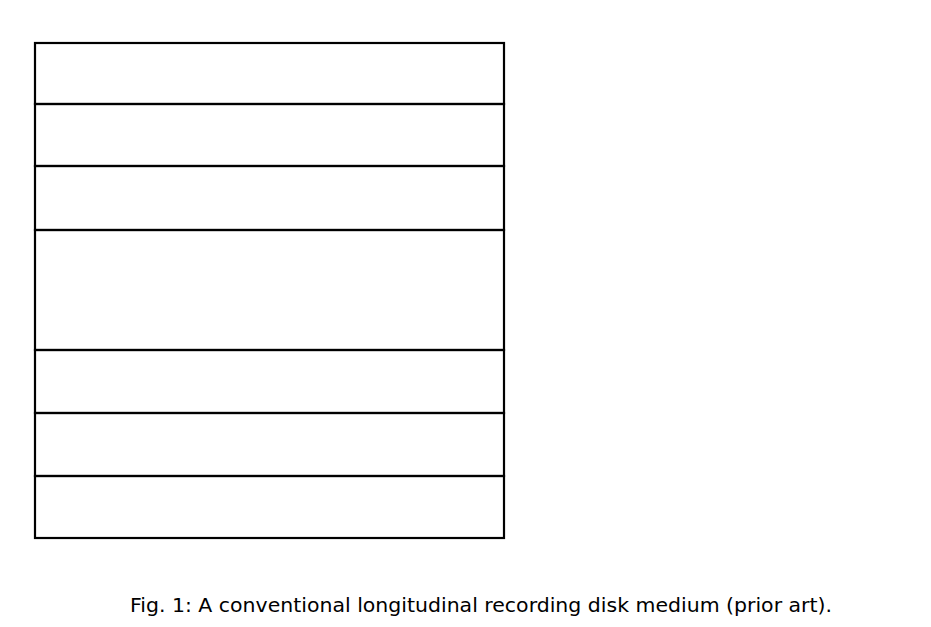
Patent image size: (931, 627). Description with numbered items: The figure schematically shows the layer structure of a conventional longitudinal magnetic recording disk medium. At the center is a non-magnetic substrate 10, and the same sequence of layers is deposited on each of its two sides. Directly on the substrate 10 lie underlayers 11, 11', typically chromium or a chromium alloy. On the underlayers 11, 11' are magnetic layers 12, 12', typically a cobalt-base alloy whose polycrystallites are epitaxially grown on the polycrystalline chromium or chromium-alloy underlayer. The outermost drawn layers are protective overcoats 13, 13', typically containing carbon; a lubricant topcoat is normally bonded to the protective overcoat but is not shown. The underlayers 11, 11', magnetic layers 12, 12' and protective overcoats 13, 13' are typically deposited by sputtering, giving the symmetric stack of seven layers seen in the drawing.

The protective overcoat 13 is at (309, 71).
The magnetic layer 12 is at (309, 135).
The underlayer 11 is at (309, 198).
The non-magnetic substrate 10 is at (522, 309).
The underlayer 11' is at (313, 381).
The magnetic layer 12' is at (313, 444).
The protective overcoat 13' is at (313, 507).